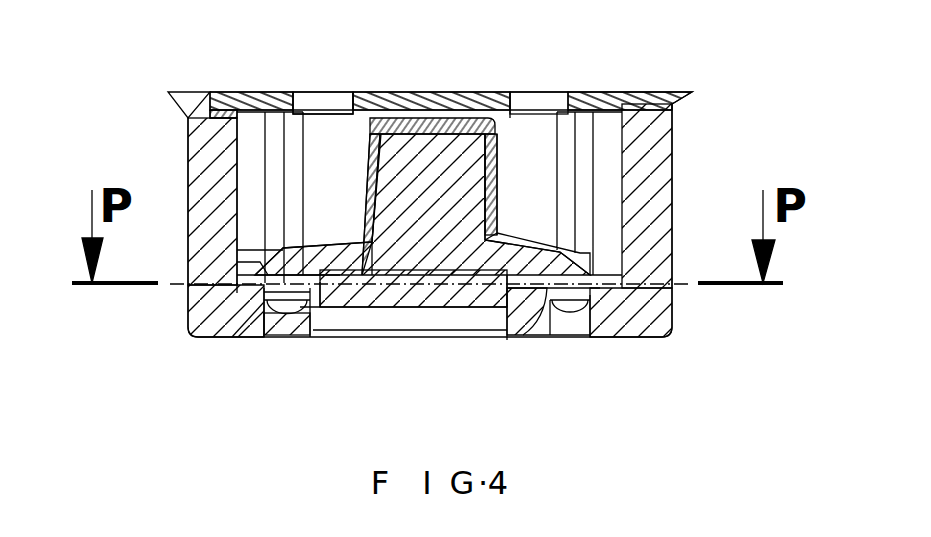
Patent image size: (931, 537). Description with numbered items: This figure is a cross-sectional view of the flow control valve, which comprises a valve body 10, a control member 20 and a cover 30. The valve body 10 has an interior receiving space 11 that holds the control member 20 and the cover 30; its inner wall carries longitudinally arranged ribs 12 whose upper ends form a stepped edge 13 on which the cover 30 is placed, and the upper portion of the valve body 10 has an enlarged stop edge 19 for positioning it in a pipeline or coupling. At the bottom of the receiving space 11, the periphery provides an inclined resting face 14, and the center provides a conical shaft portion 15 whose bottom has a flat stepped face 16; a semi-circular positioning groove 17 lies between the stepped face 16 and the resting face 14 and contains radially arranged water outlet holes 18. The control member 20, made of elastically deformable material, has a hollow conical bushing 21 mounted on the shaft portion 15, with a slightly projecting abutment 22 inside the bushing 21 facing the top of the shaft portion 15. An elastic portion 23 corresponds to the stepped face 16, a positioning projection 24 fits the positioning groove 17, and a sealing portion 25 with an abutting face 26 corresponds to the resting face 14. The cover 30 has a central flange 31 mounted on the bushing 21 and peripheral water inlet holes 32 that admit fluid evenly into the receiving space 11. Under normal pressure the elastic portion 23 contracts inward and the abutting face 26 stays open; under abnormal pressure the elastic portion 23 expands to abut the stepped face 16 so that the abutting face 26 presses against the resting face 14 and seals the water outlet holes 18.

The valve body 10 is at (665, 172).
The receiving space 11 is at (543, 146).
The ribs 12 is at (230, 161).
The stepped edge 13 is at (225, 110).
The resting face 14 is at (247, 292).
The shaft portion 15 is at (456, 162).
The stepped face 16 is at (505, 340).
The positioning groove 17 is at (296, 310).
The water outlet holes 18 is at (285, 326).
The stop edge 19 is at (182, 101).
The control member 20 is at (528, 240).
The bushing 21 is at (369, 178).
The abutment 22 is at (432, 118).
The elastic portion 23 is at (362, 255).
The positioning projection 24 is at (316, 266).
The sealing portion 25 is at (283, 252).
The abutting face 26 is at (262, 274).
The cover 30 is at (267, 100).
The flange 31 is at (368, 124).
The water inlet holes 32 is at (327, 102).